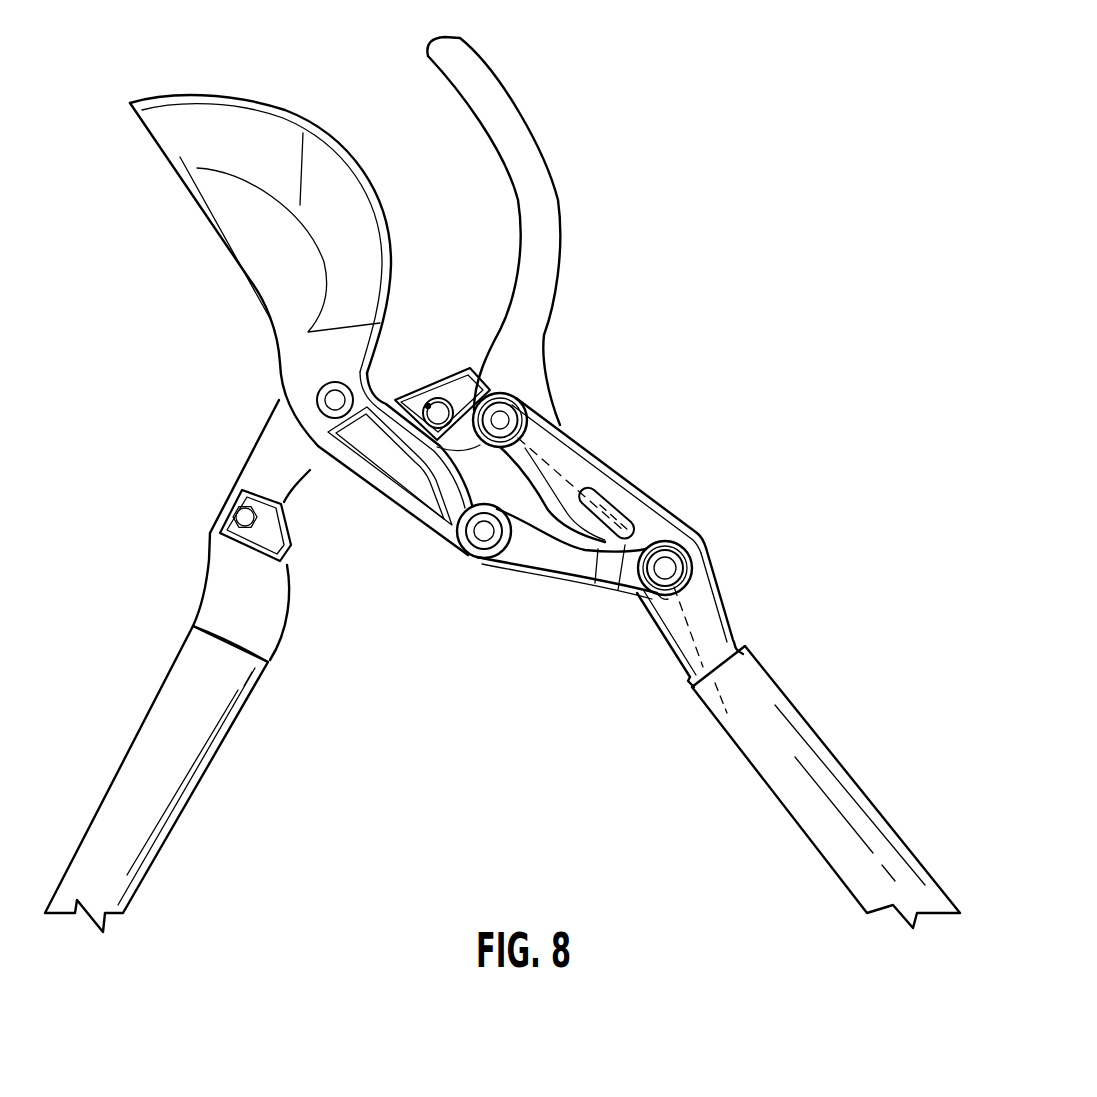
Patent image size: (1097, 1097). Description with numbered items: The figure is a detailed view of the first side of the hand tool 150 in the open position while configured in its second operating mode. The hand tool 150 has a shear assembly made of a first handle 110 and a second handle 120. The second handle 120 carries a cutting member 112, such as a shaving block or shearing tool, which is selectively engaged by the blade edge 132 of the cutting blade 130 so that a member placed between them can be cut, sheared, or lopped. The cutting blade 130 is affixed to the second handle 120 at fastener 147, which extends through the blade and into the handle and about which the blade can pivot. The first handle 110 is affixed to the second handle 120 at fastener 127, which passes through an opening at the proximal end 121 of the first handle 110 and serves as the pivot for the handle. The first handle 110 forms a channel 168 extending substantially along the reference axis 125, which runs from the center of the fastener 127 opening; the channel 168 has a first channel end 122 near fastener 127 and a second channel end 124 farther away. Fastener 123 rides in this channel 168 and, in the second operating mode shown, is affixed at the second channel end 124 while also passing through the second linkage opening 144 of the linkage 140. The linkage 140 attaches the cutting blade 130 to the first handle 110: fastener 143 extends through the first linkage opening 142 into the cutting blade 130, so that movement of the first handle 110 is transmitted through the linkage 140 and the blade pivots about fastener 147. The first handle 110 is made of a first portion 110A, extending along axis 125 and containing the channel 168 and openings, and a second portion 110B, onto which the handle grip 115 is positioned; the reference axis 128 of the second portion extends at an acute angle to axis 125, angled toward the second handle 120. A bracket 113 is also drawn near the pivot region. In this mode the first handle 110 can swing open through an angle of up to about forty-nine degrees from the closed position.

The hand tool 150 is at (630, 63).
The blade edge 132 is at (347, 147).
The cutting blade 130 is at (272, 241).
The cutting member 112 is at (540, 194).
The fastener bracket 113 is at (466, 390).
The proximal end 121 is at (494, 386).
The fastener 127 is at (502, 419).
The reference axis 125 is at (561, 470).
The first channel end 122 is at (593, 483).
The channel 168 is at (621, 511).
The first portion 110A is at (684, 545).
The second linkage opening 144 is at (682, 547).
The fastener 123 is at (667, 568).
The second portion 110B is at (737, 627).
The reference axis 128 is at (717, 690).
The second channel end 124 is at (667, 607).
The first handle 110 is at (687, 650).
The handle grip 115 is at (160, 795).
The second handle 120 is at (228, 600).
The fastener 147 is at (334, 399).
The fastener 143 is at (481, 533).
The first linkage opening 142 is at (502, 550).
The linkage 140 is at (562, 567).